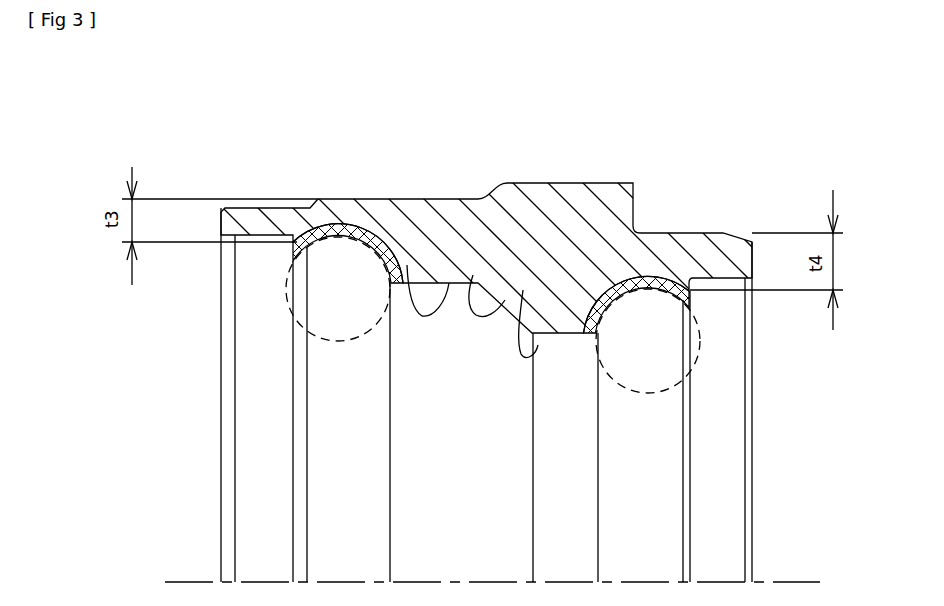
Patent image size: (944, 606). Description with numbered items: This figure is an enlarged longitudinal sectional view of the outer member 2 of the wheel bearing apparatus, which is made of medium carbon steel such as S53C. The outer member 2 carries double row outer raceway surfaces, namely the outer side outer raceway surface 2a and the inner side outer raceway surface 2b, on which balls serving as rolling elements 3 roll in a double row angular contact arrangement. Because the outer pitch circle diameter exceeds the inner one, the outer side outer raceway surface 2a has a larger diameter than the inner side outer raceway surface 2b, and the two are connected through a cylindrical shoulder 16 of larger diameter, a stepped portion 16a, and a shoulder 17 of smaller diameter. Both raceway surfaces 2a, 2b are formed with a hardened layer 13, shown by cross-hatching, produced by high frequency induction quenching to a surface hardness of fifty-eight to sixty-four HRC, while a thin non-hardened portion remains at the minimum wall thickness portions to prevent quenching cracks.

The outer member 2 is at (472, 210).
The outer side outer raceway surface 2a is at (378, 262).
The inner side outer raceway surface 2b is at (622, 312).
The rolling elements 3 is at (343, 322).
The hardened layer 13 is at (322, 238).
The cylindrical shoulder 16 is at (407, 265).
The stepped portion 16a is at (523, 290).
The shoulder 17 is at (505, 300).